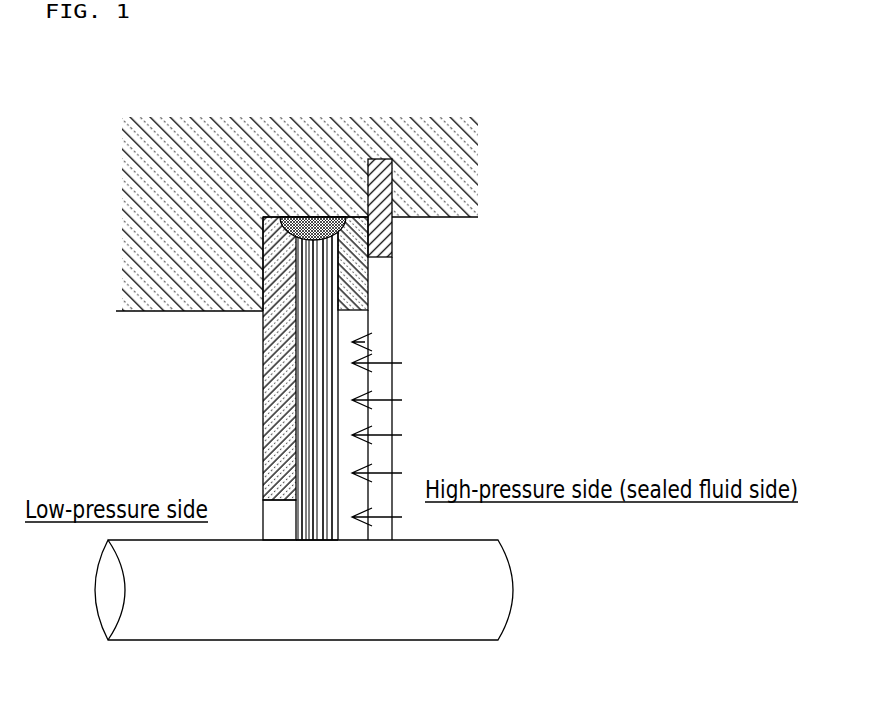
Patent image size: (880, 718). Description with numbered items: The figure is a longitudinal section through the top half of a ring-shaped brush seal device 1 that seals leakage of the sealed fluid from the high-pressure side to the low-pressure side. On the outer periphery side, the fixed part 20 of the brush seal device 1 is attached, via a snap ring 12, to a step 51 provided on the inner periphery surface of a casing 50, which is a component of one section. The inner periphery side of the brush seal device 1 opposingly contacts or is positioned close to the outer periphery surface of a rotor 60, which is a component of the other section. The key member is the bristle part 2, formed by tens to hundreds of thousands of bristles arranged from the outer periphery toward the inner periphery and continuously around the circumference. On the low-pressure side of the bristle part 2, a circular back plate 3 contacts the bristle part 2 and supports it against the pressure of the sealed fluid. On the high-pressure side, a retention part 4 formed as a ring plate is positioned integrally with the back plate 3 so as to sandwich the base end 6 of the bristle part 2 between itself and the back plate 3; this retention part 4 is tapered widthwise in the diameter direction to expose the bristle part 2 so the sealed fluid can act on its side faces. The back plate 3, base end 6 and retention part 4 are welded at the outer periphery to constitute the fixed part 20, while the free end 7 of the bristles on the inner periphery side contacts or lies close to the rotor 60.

The brush seal device 1 is at (365, 342).
The bristle part 2 is at (313, 447).
The back plate 3 is at (275, 372).
The retention part 4 is at (356, 282).
The base end 6 is at (307, 213).
The free end 7 is at (318, 540).
The snap ring 12 is at (390, 165).
The fixed part 20 is at (297, 203).
The casing 50 is at (158, 247).
The step 51 is at (263, 235).
The rotor 60 is at (445, 596).